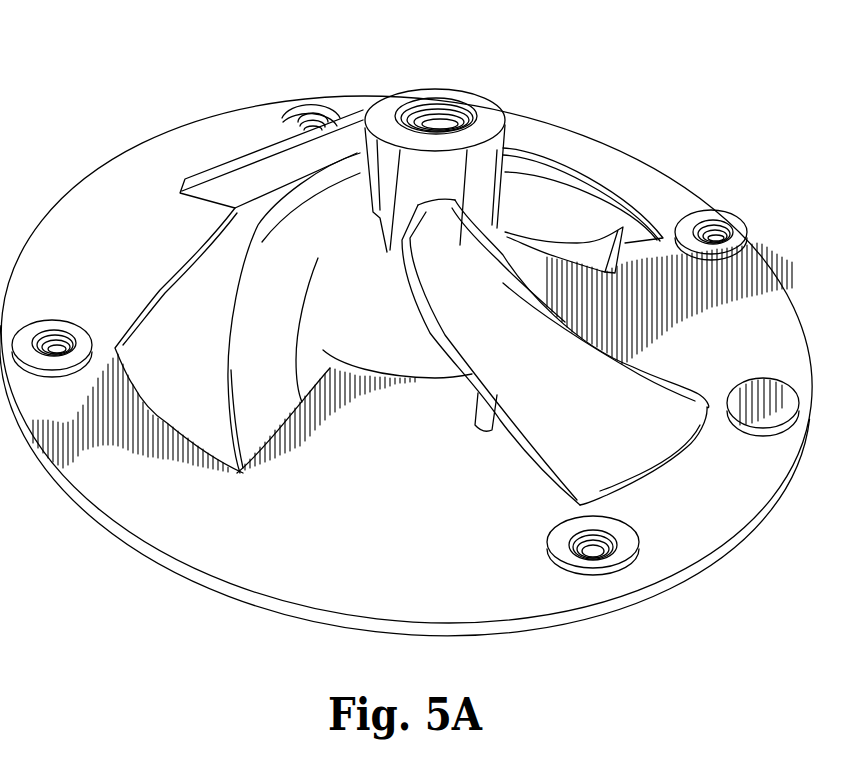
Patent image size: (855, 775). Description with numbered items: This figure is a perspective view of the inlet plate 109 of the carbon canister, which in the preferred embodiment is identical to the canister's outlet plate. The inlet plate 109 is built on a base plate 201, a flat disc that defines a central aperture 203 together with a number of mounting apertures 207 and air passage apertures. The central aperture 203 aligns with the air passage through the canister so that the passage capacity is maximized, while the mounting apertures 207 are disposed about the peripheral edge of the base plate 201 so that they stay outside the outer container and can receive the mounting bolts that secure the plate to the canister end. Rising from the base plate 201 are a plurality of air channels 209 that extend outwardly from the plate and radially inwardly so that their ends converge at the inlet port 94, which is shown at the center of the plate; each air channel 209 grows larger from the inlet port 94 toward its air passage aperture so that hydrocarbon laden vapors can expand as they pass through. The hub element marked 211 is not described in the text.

The inlet plate 109 is at (132, 92).
The inlet port 94 is at (418, 123).
The hub 211 is at (447, 118).
The air channel 209 is at (623, 378).
The central aperture 203 is at (440, 383).
The base plate 201 is at (248, 598).
The mounting aperture 207 is at (638, 557).